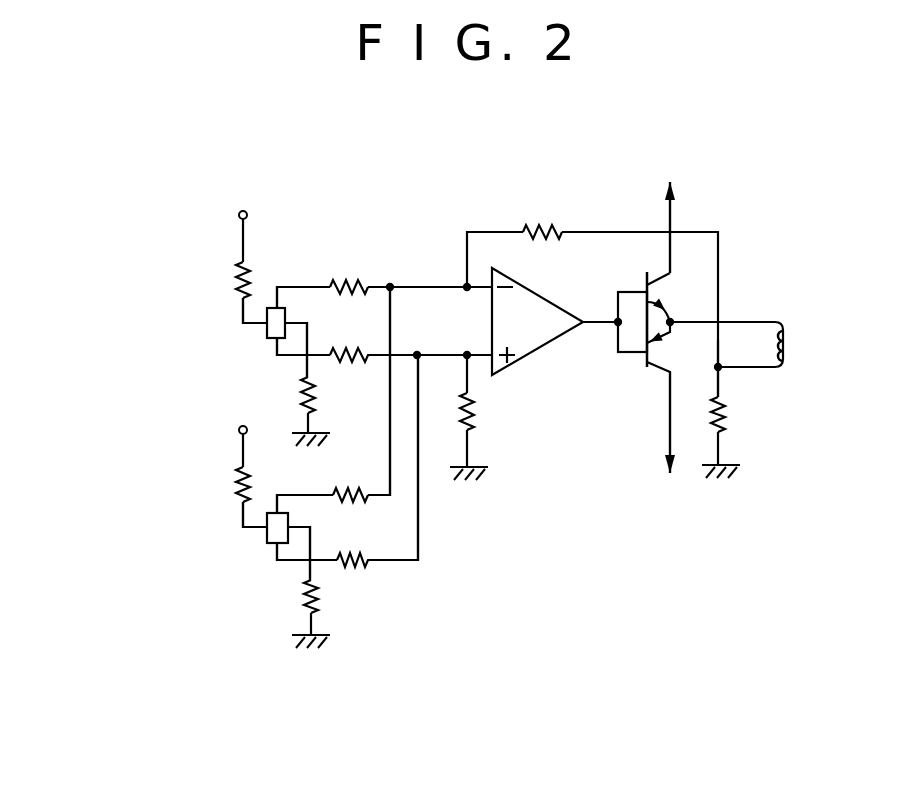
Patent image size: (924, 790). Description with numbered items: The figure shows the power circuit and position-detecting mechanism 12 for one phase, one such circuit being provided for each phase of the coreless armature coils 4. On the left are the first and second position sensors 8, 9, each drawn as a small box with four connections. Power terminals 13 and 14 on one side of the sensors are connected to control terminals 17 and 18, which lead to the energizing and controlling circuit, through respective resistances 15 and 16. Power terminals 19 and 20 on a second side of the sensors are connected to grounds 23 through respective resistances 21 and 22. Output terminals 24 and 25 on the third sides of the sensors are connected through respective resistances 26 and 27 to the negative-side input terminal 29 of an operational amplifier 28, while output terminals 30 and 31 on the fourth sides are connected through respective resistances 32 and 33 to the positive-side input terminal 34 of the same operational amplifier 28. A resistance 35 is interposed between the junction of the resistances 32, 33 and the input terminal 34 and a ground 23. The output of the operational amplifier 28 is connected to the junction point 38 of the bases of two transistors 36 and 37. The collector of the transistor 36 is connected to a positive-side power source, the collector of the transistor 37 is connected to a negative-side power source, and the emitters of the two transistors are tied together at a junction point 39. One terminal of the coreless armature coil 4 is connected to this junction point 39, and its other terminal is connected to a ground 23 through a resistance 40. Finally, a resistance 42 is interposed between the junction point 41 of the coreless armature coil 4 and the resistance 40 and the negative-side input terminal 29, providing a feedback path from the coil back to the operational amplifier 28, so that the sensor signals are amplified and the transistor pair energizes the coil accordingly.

The coreless armature coil 4 is at (785, 345).
The first position sensor 8 is at (267, 330).
The second position sensor 9 is at (266, 541).
The power circuit and position-detecting mechanism 12 is at (690, 197).
The power terminal 13 is at (243, 315).
The power terminal 14 is at (243, 521).
The resistance 15 is at (252, 275).
The resistance 16 is at (237, 480).
The control terminal 17 is at (239, 214).
The control terminal 18 is at (239, 430).
The power terminal 19 is at (310, 334).
The power terminal 20 is at (317, 537).
The resistance 21 is at (318, 396).
The resistance 22 is at (322, 597).
The ground 23 is at (325, 441).
The output terminal 24 is at (278, 297).
The output terminal 25 is at (279, 505).
The resistance 26 is at (352, 279).
The resistance 27 is at (352, 486).
The operational amplifier 28 is at (560, 333).
The negative-side input terminal 29 is at (480, 292).
The output terminal 30 is at (277, 350).
The output terminal 31 is at (278, 557).
The resistance 32 is at (382, 337).
The resistance 33 is at (358, 571).
The positive-side input terminal 34 is at (477, 357).
The resistance 35 is at (478, 418).
The transistor 36 is at (657, 286).
The transistor 37 is at (655, 371).
The junction point 38 is at (617, 320).
The junction point 39 is at (672, 320).
The resistance 40 is at (729, 414).
The junction point 41 is at (721, 370).
The resistance 42 is at (545, 228).